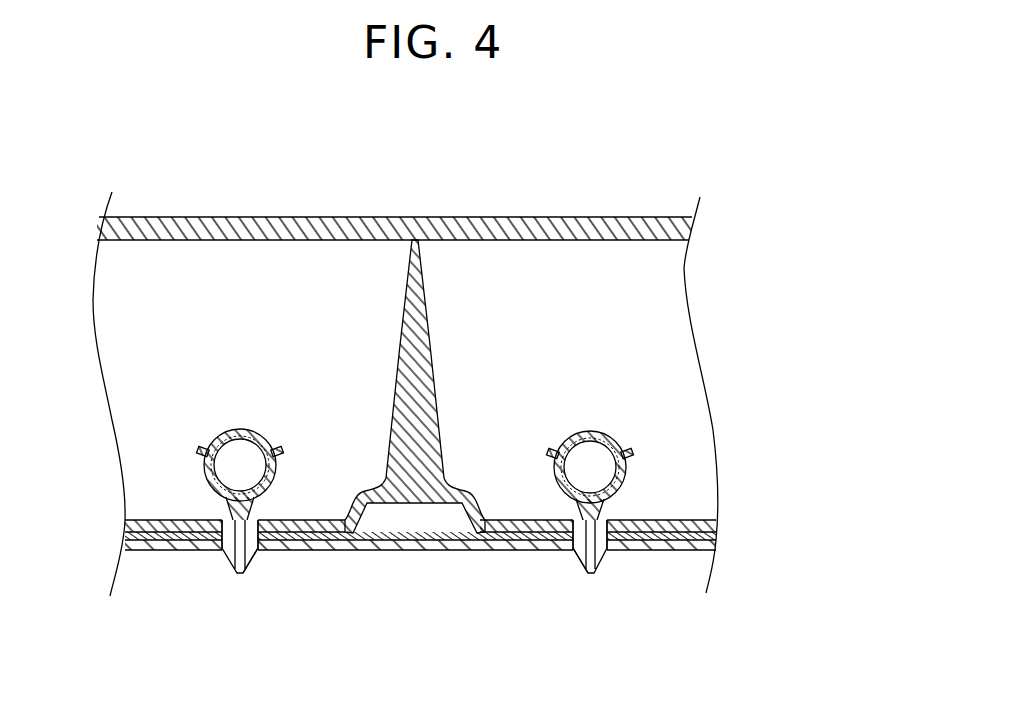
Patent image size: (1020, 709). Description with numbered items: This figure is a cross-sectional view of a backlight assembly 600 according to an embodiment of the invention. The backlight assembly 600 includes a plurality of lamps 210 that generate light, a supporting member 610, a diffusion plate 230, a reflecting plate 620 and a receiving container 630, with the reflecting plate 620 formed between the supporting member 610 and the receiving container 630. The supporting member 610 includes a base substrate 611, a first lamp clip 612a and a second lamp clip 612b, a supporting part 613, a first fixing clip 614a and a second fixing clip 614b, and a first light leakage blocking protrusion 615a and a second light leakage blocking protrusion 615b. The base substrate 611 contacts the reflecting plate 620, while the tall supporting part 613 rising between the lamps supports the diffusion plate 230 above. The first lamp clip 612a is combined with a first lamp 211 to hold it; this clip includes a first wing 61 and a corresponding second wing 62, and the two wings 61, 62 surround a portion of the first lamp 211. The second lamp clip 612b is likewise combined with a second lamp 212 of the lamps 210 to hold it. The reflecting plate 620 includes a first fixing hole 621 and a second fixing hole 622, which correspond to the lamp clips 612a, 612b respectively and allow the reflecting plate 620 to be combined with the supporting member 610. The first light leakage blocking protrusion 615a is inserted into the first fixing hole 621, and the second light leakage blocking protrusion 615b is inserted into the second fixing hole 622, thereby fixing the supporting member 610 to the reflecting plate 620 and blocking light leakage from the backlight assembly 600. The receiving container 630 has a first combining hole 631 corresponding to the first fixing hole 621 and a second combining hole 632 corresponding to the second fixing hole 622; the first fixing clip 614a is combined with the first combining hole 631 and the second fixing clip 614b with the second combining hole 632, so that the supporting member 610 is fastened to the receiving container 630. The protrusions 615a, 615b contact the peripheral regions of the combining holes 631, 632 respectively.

The backlight assembly 600 is at (736, 142).
The diffusion plate 230 is at (690, 228).
The lamps 210 is at (566, 352).
The first lamp 211 is at (263, 428).
The second lamp 212 is at (563, 428).
The first wing 61 is at (203, 447).
The second wing 62 is at (277, 447).
The supporting member 610 is at (691, 503).
The base substrate 611 is at (464, 386).
The first lamp clip 612a is at (248, 538).
The second lamp clip 612b is at (583, 513).
The supporting part 613 is at (425, 303).
The first fixing clip 614a is at (239, 577).
The second fixing clip 614b is at (590, 577).
The first light leakage blocking protrusion 615a is at (267, 550).
The second light leakage blocking protrusion 615b is at (555, 550).
The reflecting plate 620 is at (459, 583).
The first fixing hole 621 is at (178, 551).
The second fixing hole 622 is at (530, 551).
The receiving container 630 is at (464, 592).
The first combining hole 631 is at (200, 551).
The second combining hole 632 is at (617, 553).